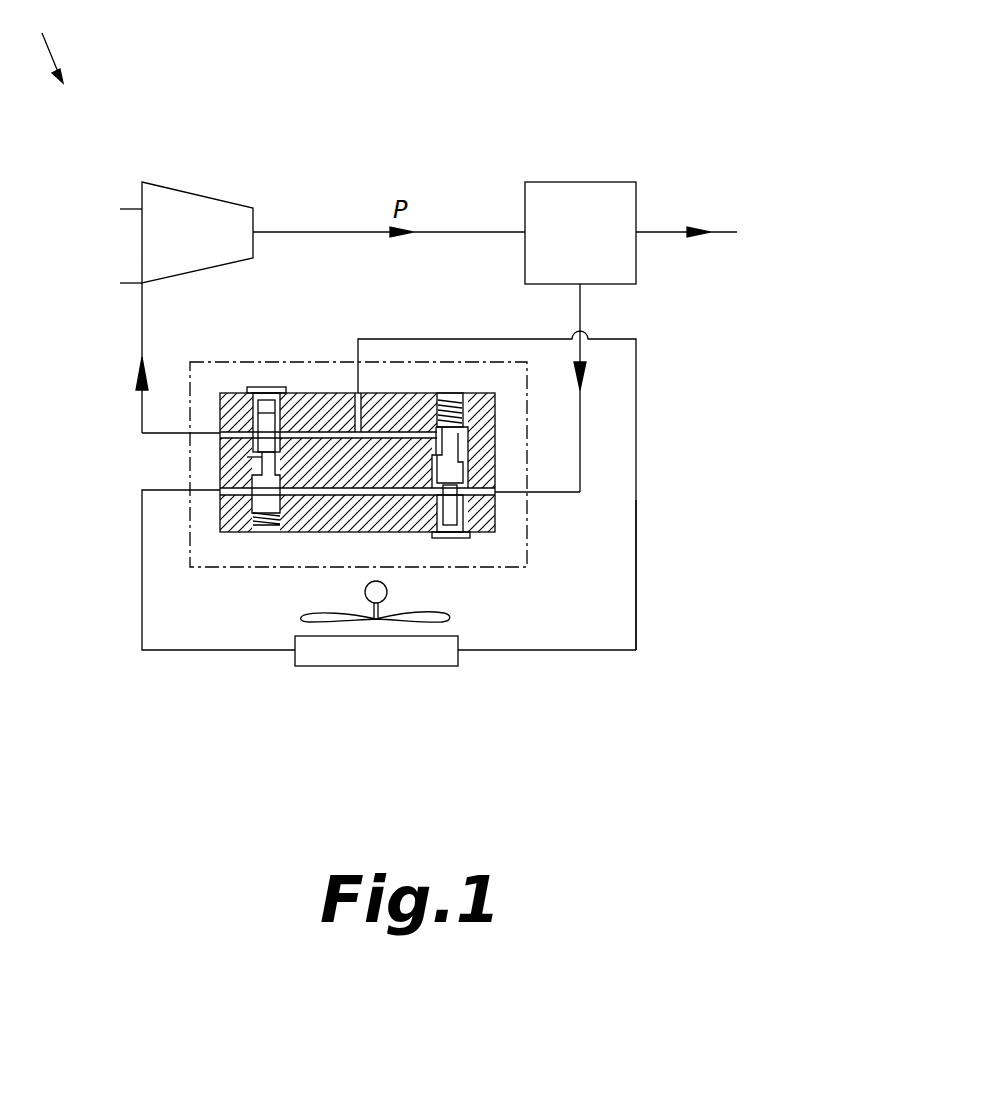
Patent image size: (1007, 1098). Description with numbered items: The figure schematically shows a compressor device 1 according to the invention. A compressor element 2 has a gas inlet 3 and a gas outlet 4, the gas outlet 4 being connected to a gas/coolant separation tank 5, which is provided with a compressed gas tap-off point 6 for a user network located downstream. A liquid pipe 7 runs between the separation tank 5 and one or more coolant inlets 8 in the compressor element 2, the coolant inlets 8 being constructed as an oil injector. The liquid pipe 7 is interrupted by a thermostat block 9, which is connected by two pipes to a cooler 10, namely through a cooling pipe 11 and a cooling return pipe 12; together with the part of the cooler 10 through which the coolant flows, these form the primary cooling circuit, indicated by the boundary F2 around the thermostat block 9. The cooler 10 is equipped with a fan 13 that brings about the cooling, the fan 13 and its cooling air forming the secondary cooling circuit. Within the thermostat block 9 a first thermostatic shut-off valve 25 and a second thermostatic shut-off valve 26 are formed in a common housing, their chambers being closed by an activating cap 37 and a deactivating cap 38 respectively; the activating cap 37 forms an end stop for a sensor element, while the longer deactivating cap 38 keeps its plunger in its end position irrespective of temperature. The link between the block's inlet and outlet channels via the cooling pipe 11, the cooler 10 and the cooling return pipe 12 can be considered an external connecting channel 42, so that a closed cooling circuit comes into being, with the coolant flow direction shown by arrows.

The compressor device 1 is at (44, 44).
The compressor element 2 is at (193, 207).
The gas inlet 3 is at (120, 209).
The gas outlet 4 is at (255, 232).
The gas/coolant separation tank 5 is at (583, 193).
The compressed gas tap-off point 6 is at (636, 232).
The liquid pipe 7 is at (142, 307).
The coolant inlet 8 is at (120, 283).
The thermostat block 9 is at (477, 510).
The cooler 10 is at (368, 652).
The cooling pipe 11 is at (142, 593).
The cooling return pipe 12 is at (636, 577).
The fan 13 is at (448, 618).
The first thermostatic shut-off valve 25 is at (457, 478).
The second thermostatic shut-off valve 26 is at (265, 462).
The activating cap 37 is at (445, 539).
The deactivating cap 38 is at (268, 393).
The external connecting channel 42 is at (636, 553).
The valve unit boundary F2 is at (527, 428).